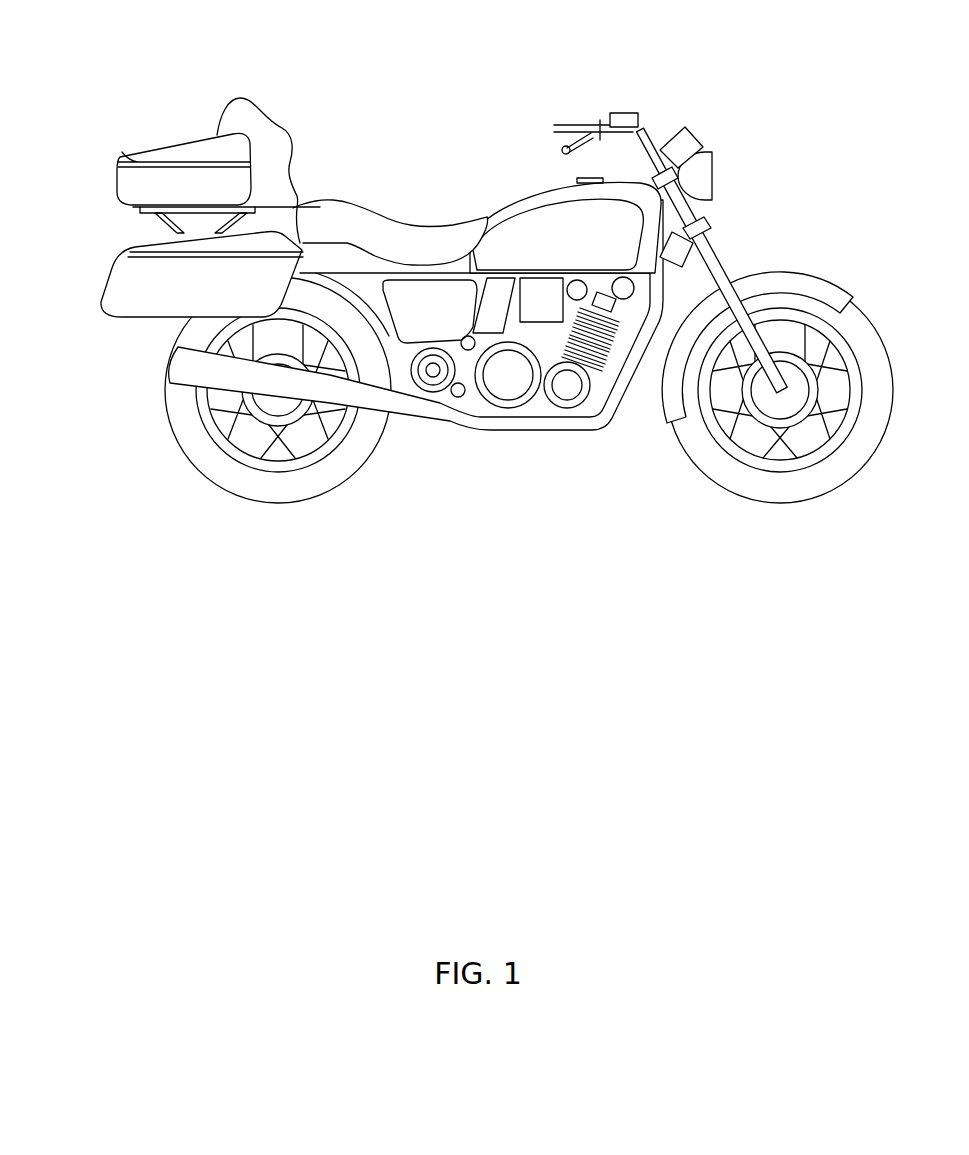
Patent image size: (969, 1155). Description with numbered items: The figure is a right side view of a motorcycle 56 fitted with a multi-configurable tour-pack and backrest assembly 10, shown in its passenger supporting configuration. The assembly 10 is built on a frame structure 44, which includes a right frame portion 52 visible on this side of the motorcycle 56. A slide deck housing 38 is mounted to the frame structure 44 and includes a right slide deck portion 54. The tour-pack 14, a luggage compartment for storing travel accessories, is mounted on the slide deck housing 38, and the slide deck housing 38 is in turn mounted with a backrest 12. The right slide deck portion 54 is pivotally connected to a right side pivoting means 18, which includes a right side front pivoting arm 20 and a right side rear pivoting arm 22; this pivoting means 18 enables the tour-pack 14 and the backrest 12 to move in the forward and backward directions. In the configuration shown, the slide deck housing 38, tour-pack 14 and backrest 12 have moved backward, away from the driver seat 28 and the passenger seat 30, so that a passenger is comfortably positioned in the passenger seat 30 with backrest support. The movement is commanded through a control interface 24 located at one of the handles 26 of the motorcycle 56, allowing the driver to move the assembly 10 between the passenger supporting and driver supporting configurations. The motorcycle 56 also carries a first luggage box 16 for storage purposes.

The multi-configurable tour-pack and backrest assembly 10 is at (227, 64).
The backrest 12 is at (278, 137).
The tour-pack 14 is at (133, 160).
The first luggage box 16 is at (112, 305).
The right side pivoting means 18 is at (128, 234).
The right side front pivoting arm 20 is at (234, 208).
The right side rear pivoting arm 22 is at (150, 222).
The control interface 24 is at (628, 113).
The handles 26 is at (579, 124).
The driver seat 28 is at (425, 237).
The passenger seat 30 is at (331, 205).
The slide deck housing 38 is at (130, 209).
The frame structure 44 is at (351, 289).
The right frame portion 52 is at (672, 300).
The right slide deck portion 54 is at (182, 210).
The motorcycle 56 is at (703, 213).